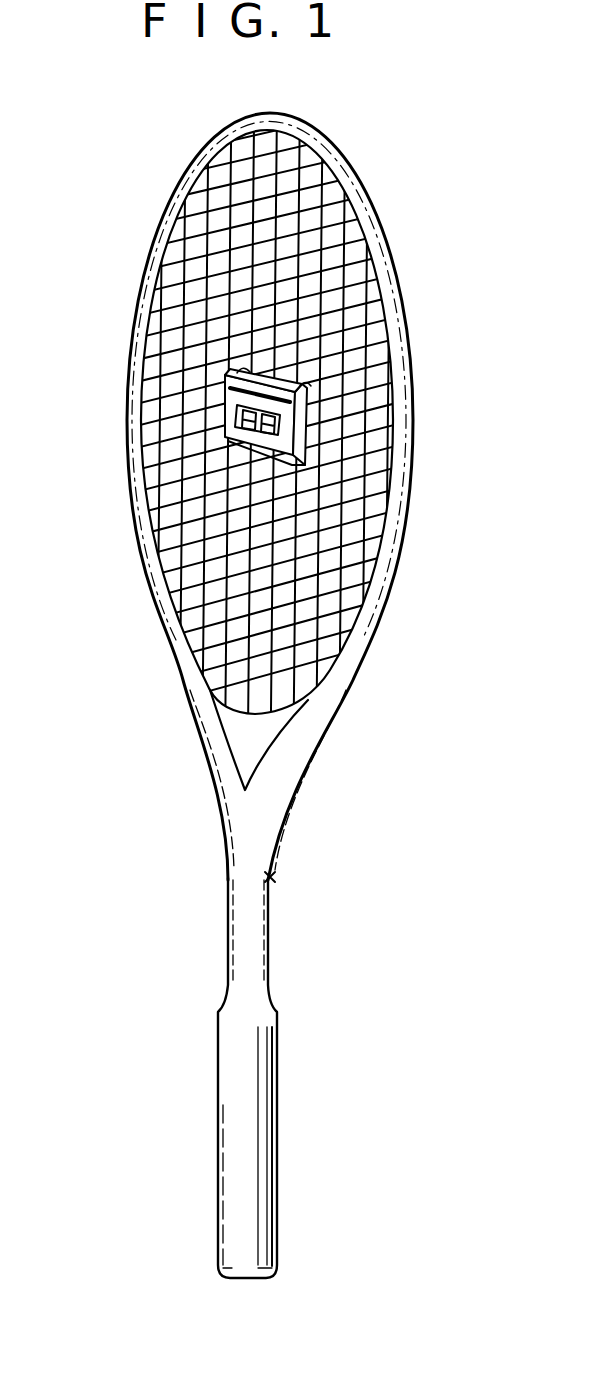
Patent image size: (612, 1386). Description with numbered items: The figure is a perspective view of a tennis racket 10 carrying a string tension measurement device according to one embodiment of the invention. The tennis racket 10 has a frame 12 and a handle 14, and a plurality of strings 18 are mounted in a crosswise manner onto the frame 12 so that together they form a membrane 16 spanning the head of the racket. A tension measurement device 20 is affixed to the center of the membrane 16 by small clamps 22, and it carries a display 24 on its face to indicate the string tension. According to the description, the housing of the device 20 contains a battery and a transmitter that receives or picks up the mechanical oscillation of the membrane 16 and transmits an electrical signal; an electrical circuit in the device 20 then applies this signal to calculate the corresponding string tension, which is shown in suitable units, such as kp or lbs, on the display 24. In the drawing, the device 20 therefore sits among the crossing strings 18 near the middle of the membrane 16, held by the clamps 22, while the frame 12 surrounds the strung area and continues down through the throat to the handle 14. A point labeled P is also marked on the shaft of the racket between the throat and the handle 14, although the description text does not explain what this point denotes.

The tennis racket 10 is at (381, 190).
The frame 12 is at (378, 262).
The handle 14 is at (259, 1085).
The membrane 16 is at (357, 457).
The strings 18 is at (350, 542).
The tension measurement device 20 is at (225, 404).
The clamps 22 is at (244, 368).
The display 24 is at (225, 439).
The point P on the shaft P is at (274, 876).